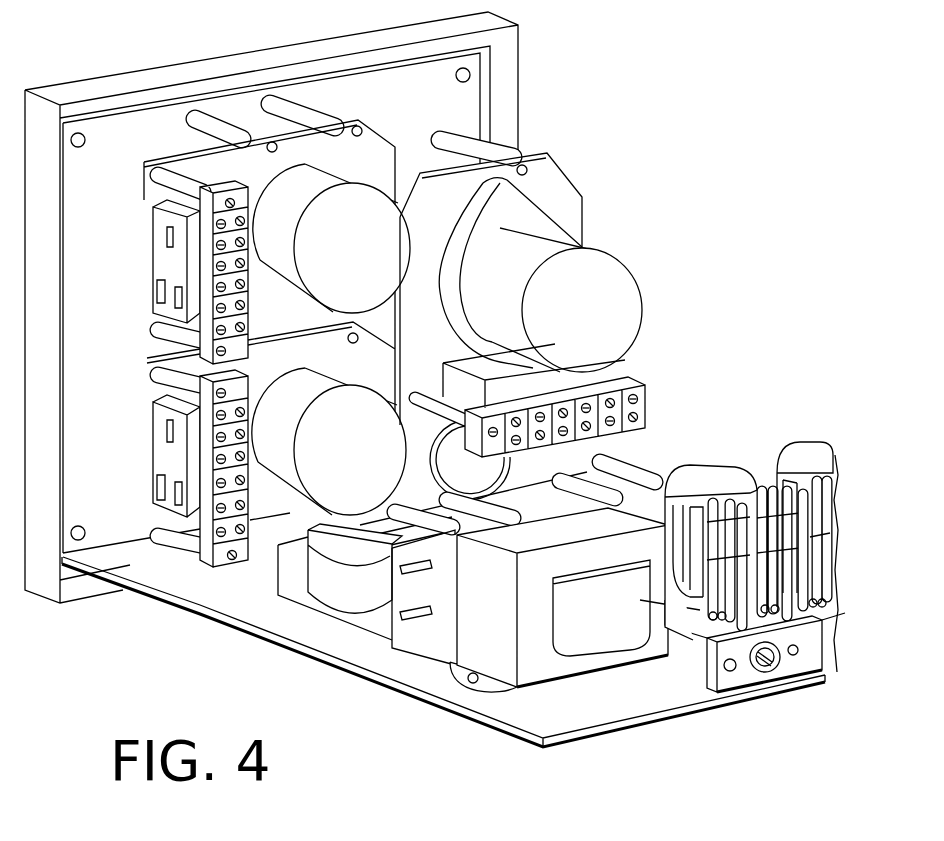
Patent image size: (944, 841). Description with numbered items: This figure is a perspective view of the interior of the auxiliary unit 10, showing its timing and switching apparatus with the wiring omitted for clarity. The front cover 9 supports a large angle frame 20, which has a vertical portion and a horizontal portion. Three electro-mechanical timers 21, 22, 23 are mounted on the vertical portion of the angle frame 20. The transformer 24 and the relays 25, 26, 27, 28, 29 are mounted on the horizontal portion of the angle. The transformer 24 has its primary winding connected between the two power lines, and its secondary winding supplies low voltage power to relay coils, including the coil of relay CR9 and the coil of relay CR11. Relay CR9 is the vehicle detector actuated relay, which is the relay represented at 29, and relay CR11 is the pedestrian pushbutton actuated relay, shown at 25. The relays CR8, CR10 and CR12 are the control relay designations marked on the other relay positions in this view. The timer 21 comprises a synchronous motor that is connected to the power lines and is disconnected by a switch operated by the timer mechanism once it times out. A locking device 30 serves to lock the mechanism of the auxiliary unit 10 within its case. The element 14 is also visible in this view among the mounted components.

The front cover 9 is at (520, 38).
The auxiliary unit 10 is at (657, 262).
The relay 14 is at (461, 480).
The angle frame 20 is at (302, 658).
The timer 21 is at (569, 322).
The timer 22 is at (339, 257).
The timer 23 is at (335, 460).
The transformer 24 is at (591, 617).
The relay 25 is at (332, 594).
The relay 26 is at (452, 502).
The relay 27 is at (677, 494).
The relay 28 is at (651, 452).
The relay 29 is at (792, 471).
The locking device 30 is at (747, 683).
The control relay CR8 is at (671, 456).
The vehicle detector actuated relay CR9 is at (820, 433).
The control relay CR10 is at (537, 484).
The pedestrian pushbutton actuated relay CR11 is at (443, 592).
The control relay CR12 is at (760, 531).